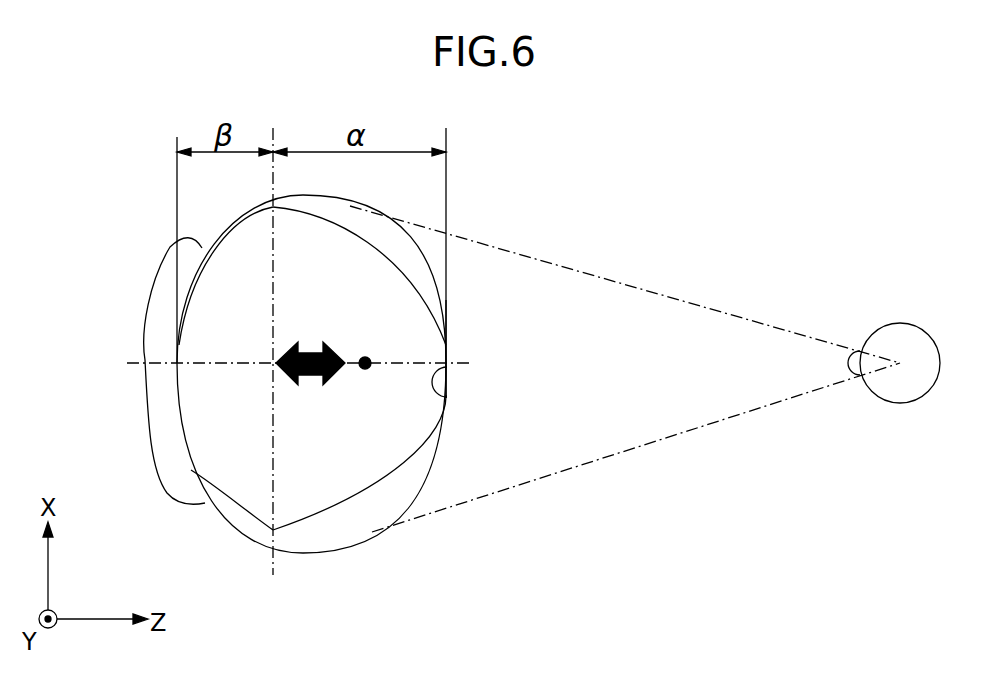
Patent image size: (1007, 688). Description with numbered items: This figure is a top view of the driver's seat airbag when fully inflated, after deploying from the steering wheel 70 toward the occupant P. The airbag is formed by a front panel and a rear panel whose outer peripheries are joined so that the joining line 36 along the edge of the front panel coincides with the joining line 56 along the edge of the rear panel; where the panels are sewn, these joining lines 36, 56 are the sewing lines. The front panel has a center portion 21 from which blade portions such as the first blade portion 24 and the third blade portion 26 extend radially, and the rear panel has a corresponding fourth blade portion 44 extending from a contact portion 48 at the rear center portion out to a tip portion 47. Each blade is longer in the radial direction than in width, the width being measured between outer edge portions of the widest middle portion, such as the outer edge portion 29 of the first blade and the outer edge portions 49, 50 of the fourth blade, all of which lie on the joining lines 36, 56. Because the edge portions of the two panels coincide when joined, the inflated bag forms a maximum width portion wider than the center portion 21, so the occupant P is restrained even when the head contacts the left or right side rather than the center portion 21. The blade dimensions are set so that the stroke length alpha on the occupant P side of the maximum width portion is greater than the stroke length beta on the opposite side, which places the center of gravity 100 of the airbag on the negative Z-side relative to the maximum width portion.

The center portion 21 is at (446, 341).
The first blade portion 24 is at (366, 519).
The third blade portion 26 is at (348, 218).
The outer edge portion 29 is at (229, 534).
The outer edge portion 50 is at (275, 532).
The joining line 36 is at (396, 473).
The joining line 56 is at (389, 480).
The fourth blade portion 44 is at (418, 310).
The tip portion 47 is at (446, 398).
The contact portion 48 is at (177, 367).
The outer edge portion 49 is at (273, 207).
The steering wheel 70 is at (168, 277).
The center of gravity 100 is at (367, 367).
The occupant P is at (899, 322).